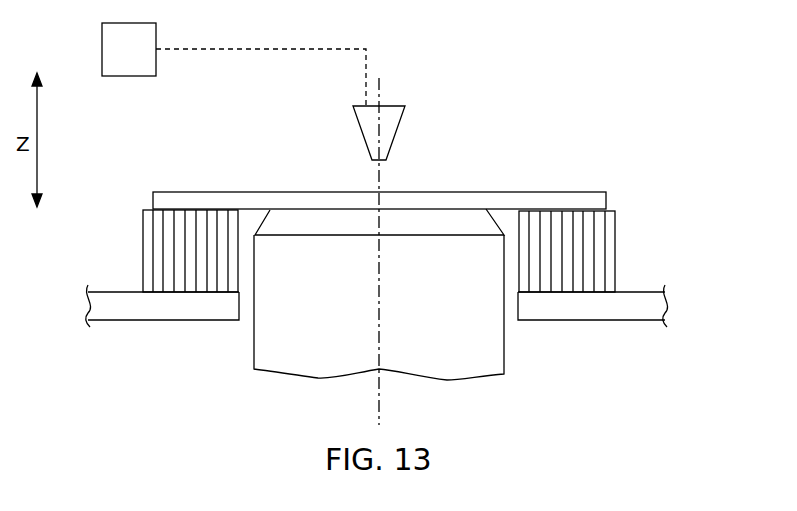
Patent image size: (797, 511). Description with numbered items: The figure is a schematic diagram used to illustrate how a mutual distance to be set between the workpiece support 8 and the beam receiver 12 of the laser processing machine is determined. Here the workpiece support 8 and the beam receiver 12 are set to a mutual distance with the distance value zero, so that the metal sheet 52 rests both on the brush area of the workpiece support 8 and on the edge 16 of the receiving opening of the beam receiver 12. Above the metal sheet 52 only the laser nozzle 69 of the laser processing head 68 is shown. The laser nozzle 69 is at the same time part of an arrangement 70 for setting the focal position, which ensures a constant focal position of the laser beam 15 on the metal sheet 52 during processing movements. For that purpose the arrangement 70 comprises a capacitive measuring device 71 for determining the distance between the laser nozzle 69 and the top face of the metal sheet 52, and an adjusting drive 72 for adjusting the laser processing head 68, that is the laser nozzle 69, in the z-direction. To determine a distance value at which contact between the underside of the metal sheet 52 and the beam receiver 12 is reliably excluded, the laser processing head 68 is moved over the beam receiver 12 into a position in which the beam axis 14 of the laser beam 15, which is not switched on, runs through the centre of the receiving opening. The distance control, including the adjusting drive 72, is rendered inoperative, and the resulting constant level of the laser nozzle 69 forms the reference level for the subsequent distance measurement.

The adjusting drive 72 is at (143, 58).
The laser processing head 68 is at (458, 128).
The laser nozzle 69 is at (458, 128).
The arrangement for setting the focal position 70 is at (458, 128).
The capacitive measuring device 71 is at (403, 122).
The beam axis 14 is at (333, 251).
The laser beam 15 is at (378, 179).
The edge of the receiving opening 16 is at (455, 222).
The metal sheet 52 is at (152, 197).
The workpiece support 8 is at (143, 255).
The beam receiver 12 is at (463, 340).